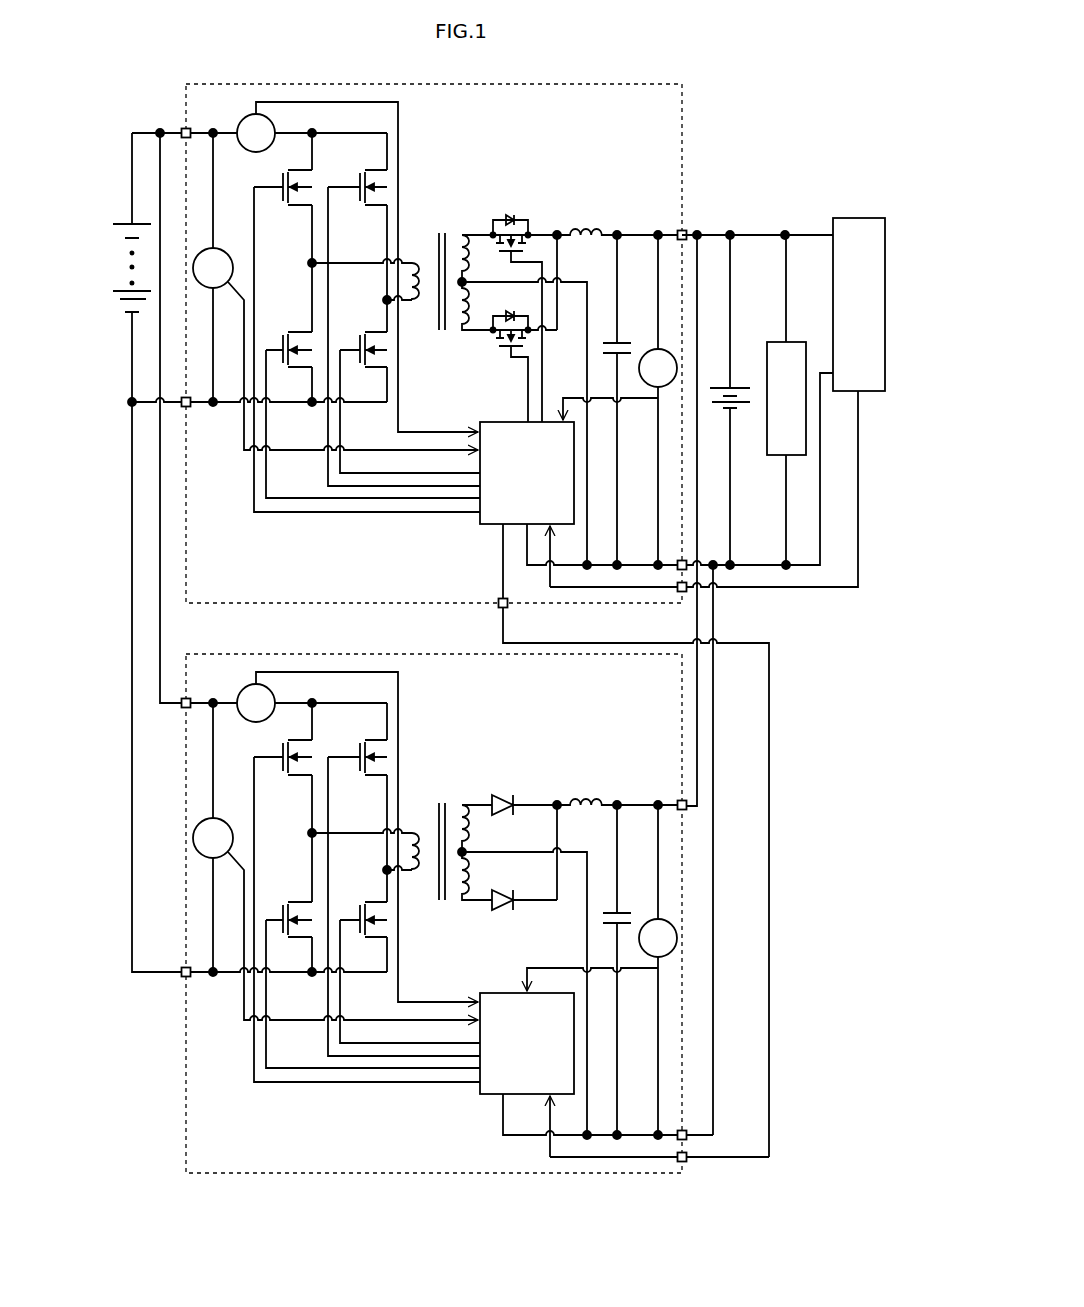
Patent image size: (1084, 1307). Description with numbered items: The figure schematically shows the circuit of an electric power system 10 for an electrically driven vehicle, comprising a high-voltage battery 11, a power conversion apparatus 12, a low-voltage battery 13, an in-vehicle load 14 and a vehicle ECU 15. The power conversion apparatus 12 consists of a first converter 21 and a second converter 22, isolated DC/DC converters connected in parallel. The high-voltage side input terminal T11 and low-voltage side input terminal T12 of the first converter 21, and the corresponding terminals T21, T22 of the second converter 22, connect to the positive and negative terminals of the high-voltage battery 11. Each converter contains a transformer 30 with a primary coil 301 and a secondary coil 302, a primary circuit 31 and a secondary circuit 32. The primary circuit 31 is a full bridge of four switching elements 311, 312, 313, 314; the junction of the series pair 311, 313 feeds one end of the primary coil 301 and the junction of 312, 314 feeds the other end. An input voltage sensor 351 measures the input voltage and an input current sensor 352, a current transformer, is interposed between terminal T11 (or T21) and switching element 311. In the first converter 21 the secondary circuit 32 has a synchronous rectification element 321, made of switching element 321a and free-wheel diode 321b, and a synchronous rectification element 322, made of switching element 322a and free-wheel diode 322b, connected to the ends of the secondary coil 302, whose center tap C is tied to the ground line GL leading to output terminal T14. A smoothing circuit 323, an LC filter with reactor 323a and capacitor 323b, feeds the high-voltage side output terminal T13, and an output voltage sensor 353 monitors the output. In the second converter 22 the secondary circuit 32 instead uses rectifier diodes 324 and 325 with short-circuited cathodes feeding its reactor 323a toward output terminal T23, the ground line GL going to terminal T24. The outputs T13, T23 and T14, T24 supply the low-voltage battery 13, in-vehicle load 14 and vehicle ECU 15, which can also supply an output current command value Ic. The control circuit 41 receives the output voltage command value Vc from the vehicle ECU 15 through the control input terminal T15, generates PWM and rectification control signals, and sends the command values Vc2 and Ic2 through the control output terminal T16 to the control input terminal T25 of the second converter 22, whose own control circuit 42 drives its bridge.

The electric power system 10 is at (880, 111).
The high-voltage battery 11 is at (126, 226).
The power conversion apparatus 12 is at (786, 659).
The low-voltage battery 13 is at (733, 387).
The in-vehicle load 14 is at (797, 342).
The vehicle ECU 15 is at (868, 218).
The first converter 21 is at (184, 87).
The second converter 22 is at (185, 1170).
The transformer 30 is at (450, 297).
The primary circuit 31 is at (365, 256).
The secondary circuit 32 is at (561, 338).
The control circuit 41 is at (511, 421).
The control circuit 42 is at (506, 992).
The primary coil 301 is at (420, 258).
The secondary coil 302 is at (463, 232).
The switching element 311 is at (283, 203).
The switching element 312 is at (360, 203).
The switching element 313 is at (283, 334).
The switching element 314 is at (360, 334).
The synchronous rectification element 321 is at (553, 290).
The switching element 321a is at (528, 247).
The free-wheel diode 321b is at (516, 218).
The synchronous rectification element 322 is at (499, 355).
The switching element 322a is at (497, 342).
The free-wheel diode 322b is at (516, 319).
The smoothing circuit 323 is at (617, 362).
The reactor 323a is at (583, 219).
The capacitor 323b is at (632, 334).
The rectifier diode 324 is at (505, 795).
The rectifier diode 325 is at (503, 892).
The input voltage sensor 351 is at (238, 240).
The input current sensor 352 is at (243, 121).
The output voltage sensor 353 is at (656, 391).
The center tap C is at (465, 282).
The ground line GL is at (641, 558).
The high-voltage side input terminal T11 is at (183, 132).
The low-voltage side input terminal T12 is at (188, 410).
The high-voltage side output terminal T13 is at (686, 232).
The low-voltage side output terminal T14 is at (680, 572).
The control input terminal T15 is at (681, 592).
The control output terminal T16 is at (499, 600).
The high-voltage side input terminal T21 is at (183, 710).
The low-voltage side input terminal T22 is at (183, 979).
The high-voltage side output terminal T23 is at (690, 803).
The low-voltage side output terminal T24 is at (690, 1133).
The control input terminal T25 is at (688, 1158).
The output voltage command value Vc is at (878, 496).
The output current command value Ic is at (874, 536).
The output voltage command value Vc2 is at (799, 728).
The output current command value Ic2 is at (796, 763).